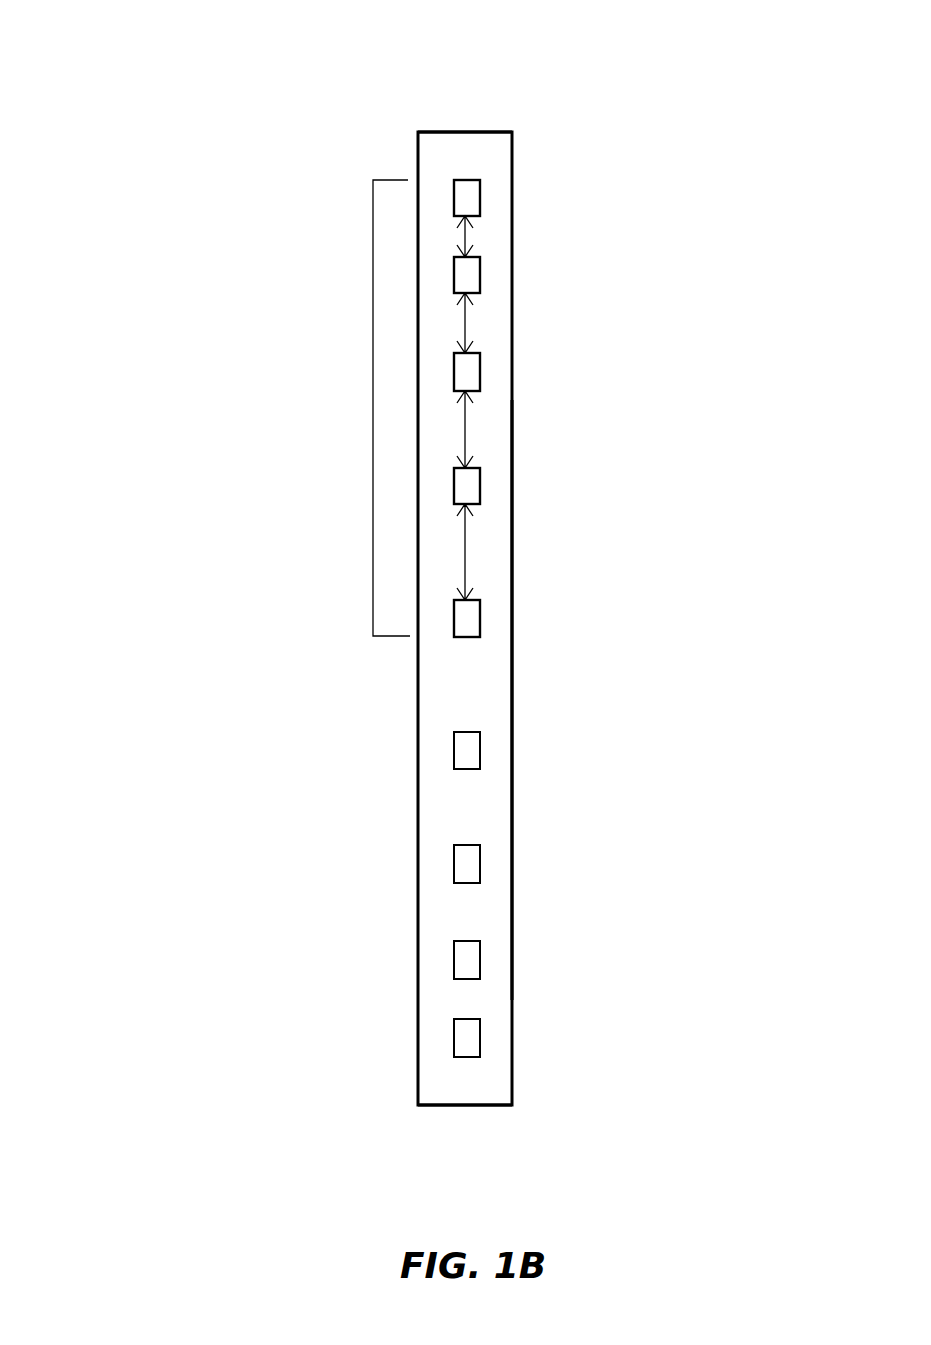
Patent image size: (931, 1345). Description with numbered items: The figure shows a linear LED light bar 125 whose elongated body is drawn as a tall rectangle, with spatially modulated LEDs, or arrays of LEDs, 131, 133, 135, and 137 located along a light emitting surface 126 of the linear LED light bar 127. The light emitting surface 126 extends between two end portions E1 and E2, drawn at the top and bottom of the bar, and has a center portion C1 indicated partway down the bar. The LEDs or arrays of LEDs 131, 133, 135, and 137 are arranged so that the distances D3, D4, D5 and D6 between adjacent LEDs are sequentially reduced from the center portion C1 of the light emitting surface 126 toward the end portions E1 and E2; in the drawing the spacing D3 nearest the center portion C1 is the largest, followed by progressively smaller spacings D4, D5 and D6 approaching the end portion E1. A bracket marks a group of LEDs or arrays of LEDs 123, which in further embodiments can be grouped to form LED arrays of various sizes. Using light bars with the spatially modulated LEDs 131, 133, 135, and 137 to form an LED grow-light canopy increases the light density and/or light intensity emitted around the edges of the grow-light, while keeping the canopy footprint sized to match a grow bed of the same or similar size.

The linear LED light bar 125 is at (155, 76).
The light emitting surface 126 is at (485, 158).
The linear LED light bar 127 is at (512, 668).
The groups of LEDs or arrays of LEDs 123 is at (373, 427).
The spatially modulated LED or array of LEDs 131 is at (480, 197).
The spatially modulated LED or array of LEDs 133 is at (480, 275).
The spatially modulated LED or array of LEDs 135 is at (480, 372).
The spatially modulated LED or array of LEDs 137 is at (480, 485).
The end portion E1 is at (438, 132).
The end portion E2 is at (463, 1105).
The center portion C1 is at (443, 622).
The distance between adjacent LEDs D3 is at (465, 552).
The distance between adjacent LEDs D4 is at (465, 430).
The distance between adjacent LEDs D5 is at (465, 323).
The distance between adjacent LEDs D6 is at (465, 236).